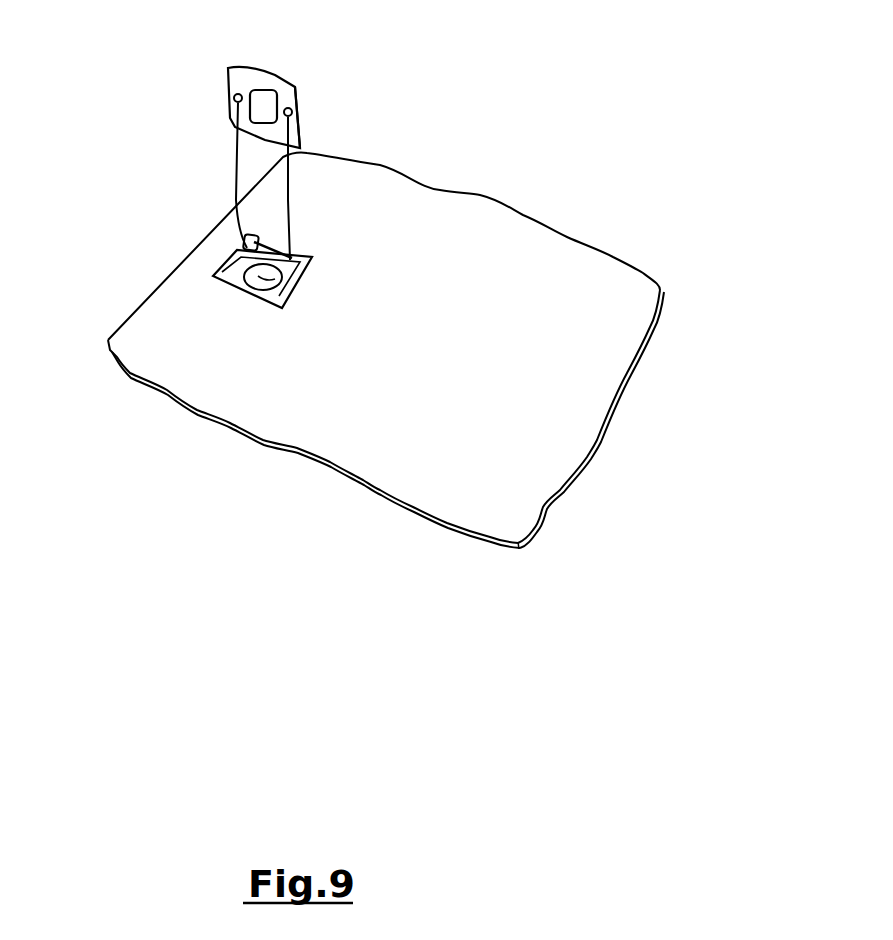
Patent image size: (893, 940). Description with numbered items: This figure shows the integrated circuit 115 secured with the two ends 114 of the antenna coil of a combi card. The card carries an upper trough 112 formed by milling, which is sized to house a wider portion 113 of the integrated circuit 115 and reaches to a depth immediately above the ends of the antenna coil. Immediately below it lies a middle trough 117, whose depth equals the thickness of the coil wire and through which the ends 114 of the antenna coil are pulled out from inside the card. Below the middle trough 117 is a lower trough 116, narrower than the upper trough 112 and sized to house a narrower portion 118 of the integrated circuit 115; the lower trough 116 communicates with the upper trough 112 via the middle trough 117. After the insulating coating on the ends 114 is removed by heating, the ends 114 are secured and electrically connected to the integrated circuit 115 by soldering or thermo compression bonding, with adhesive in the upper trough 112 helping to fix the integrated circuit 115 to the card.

The upper trough 112 is at (277, 307).
The wider portion of integrated circuit 113 is at (243, 73).
The ends of antenna coil 114 is at (232, 122).
The integrated circuit 115 is at (303, 128).
The lower trough 116 is at (240, 293).
The middle trough 117 is at (237, 295).
The narrower portion of integrated circuit 118 is at (263, 102).